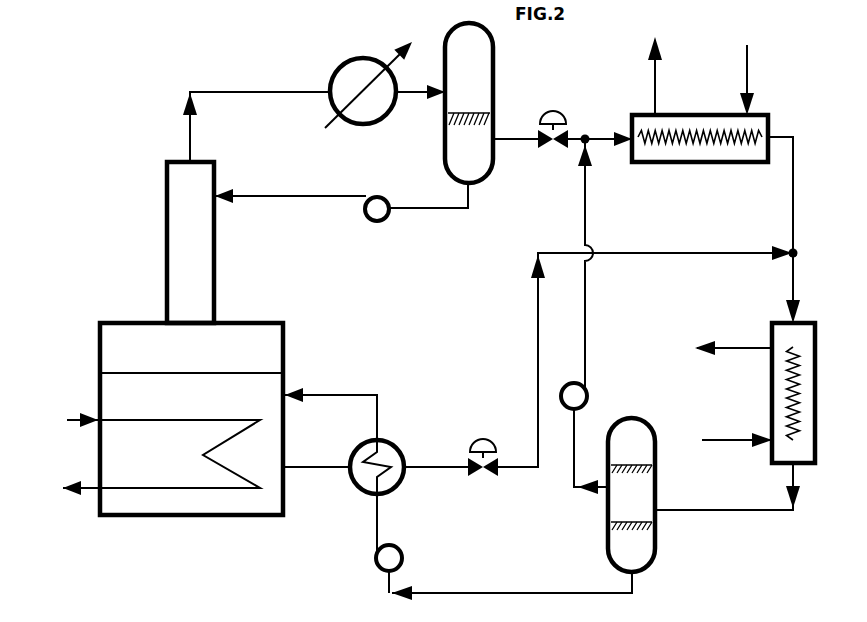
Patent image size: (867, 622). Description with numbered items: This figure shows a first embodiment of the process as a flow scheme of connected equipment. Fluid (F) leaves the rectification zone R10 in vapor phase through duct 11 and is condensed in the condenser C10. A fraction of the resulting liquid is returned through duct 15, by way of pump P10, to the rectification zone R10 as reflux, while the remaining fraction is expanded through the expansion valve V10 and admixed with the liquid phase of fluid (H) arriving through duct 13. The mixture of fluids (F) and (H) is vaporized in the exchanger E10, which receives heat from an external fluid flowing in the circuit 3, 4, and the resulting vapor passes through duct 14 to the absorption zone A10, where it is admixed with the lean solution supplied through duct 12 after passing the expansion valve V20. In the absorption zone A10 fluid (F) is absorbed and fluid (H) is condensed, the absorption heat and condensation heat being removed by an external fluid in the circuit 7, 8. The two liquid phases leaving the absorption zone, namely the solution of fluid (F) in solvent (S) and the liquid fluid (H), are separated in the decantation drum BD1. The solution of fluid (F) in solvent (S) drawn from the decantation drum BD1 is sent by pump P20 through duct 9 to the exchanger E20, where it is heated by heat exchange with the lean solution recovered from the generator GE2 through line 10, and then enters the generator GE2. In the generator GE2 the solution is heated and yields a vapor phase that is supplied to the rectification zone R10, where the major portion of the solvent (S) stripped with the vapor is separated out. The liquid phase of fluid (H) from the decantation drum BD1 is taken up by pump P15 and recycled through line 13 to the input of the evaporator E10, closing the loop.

The external fluid circuit 3 is at (745, 80).
The external fluid circuit 4 is at (655, 80).
The external fluid circuit 7 is at (708, 438).
The external fluid circuit 8 is at (705, 357).
The duct 9 is at (372, 522).
The line 10 is at (332, 470).
The duct 11 is at (228, 89).
The duct 12 is at (536, 332).
The duct 13 is at (585, 198).
The duct 14 is at (793, 200).
The duct 15 is at (282, 199).
The condenser C10 is at (340, 60).
The pump P10 is at (372, 198).
The pump P15 is at (590, 438).
The pump P20 is at (402, 549).
The exchanger E10 is at (700, 162).
The exchanger E20 is at (393, 446).
The expansion valve V10 is at (557, 106).
The expansion valve V20 is at (491, 436).
The rectification zone R10 is at (214, 272).
The generator GE2 is at (187, 518).
The decantation drum BD1 is at (657, 543).
The absorption zone A10 is at (772, 383).